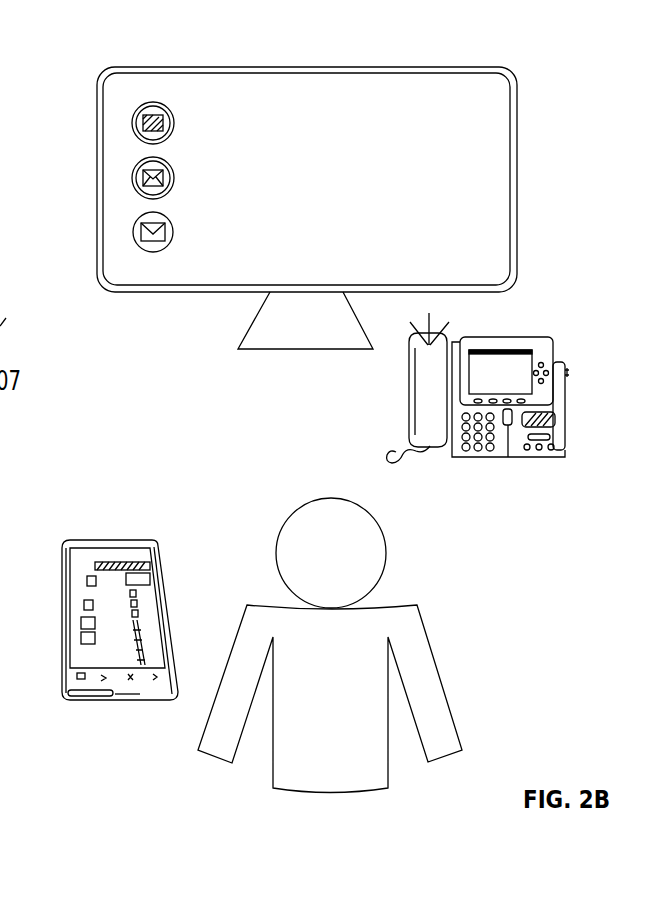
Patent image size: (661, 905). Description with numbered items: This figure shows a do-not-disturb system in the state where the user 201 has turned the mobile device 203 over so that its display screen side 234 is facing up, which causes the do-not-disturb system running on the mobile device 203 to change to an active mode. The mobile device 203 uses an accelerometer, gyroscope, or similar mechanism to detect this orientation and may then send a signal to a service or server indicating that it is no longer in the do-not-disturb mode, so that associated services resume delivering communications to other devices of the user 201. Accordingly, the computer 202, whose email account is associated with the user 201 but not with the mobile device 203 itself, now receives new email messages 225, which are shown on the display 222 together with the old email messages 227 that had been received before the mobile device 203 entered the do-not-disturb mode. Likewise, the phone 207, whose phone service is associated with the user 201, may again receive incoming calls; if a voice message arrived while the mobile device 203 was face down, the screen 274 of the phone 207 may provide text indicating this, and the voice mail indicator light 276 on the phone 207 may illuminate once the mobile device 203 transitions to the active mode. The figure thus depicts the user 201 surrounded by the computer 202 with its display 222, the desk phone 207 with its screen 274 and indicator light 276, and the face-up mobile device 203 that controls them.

The user 201 is at (390, 777).
The computer 202 is at (447, 65).
The mobile device 203 is at (118, 700).
The phone 207 is at (568, 413).
The display 222 is at (490, 248).
The new email messages 225 is at (487, 125).
The old email messages 227 is at (360, 233).
The display screen side 234 is at (77, 588).
The screen 274 is at (532, 358).
The voice mail indicator light 276 is at (425, 362).